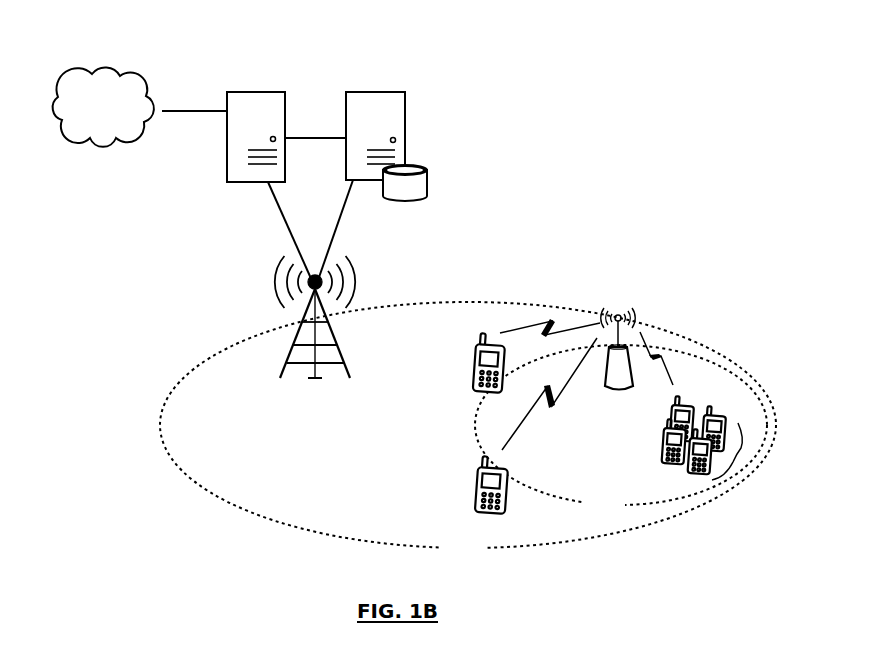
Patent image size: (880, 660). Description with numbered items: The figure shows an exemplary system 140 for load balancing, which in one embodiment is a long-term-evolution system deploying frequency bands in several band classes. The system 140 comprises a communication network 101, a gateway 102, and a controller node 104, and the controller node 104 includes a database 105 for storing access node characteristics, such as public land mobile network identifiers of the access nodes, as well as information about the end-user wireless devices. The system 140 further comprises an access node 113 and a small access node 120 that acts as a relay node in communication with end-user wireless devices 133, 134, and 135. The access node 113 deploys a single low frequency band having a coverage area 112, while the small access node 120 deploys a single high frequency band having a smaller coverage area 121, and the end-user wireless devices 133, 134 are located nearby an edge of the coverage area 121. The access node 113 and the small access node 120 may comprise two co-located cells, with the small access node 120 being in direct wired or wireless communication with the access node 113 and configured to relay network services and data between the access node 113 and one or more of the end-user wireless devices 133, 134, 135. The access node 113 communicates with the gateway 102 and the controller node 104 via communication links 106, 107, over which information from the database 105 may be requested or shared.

The communication network 101 is at (122, 118).
The gateway 102 is at (232, 124).
The controller node 104 is at (408, 131).
The database 105 is at (436, 174).
The communication link 106 is at (283, 215).
The communication link 107 is at (343, 210).
The coverage area 112 is at (192, 373).
The access node 113 is at (297, 348).
The small access node 120 is at (642, 329).
The coverage area 121 is at (621, 412).
The end-user wireless device 133 is at (475, 372).
The end-user wireless device 134 is at (482, 498).
The end-user wireless device 135 is at (738, 458).
The system 140 is at (645, 149).